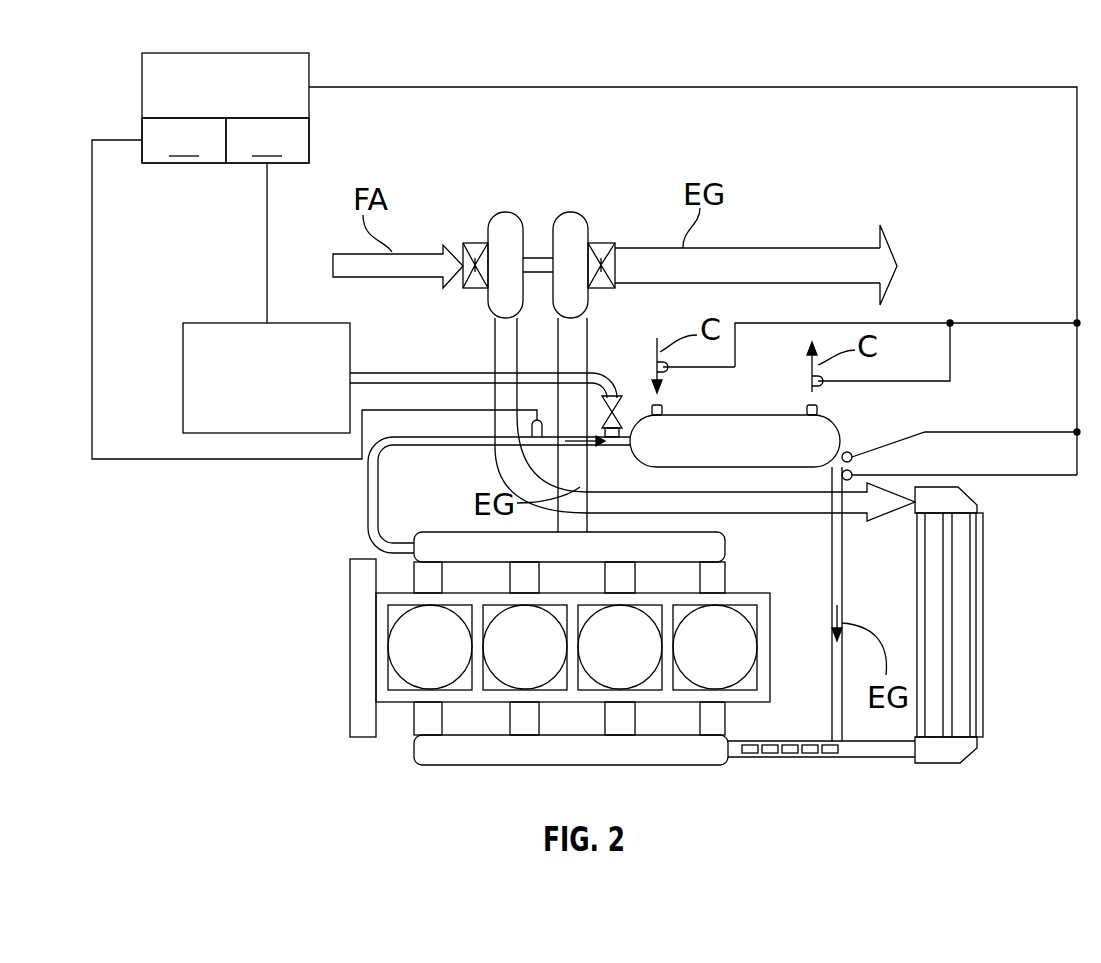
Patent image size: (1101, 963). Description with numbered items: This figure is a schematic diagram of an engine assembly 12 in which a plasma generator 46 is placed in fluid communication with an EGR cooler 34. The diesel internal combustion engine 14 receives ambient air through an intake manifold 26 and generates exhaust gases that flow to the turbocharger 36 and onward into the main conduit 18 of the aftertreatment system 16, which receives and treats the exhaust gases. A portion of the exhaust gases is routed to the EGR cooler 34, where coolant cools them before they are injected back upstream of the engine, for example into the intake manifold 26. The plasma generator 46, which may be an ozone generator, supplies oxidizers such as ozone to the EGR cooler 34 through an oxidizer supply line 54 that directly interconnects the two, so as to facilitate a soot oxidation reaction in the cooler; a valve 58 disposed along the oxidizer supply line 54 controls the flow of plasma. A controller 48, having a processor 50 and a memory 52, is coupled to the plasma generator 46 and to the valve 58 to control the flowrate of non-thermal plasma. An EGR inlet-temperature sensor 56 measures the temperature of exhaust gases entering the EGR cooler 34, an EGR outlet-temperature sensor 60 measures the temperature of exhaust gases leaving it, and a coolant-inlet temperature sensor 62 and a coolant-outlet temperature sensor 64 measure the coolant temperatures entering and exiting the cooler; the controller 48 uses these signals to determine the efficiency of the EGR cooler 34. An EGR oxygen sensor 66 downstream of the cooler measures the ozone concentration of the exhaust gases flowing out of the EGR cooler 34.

The engine assembly 12 is at (681, 130).
The diesel internal combustion engine 14 is at (572, 765).
The aftertreatment system 16 is at (763, 228).
The main conduit 18 is at (648, 248).
The intake manifold 26 is at (983, 627).
The EGR cooler 34 is at (735, 415).
The turbocharger 36 is at (537, 204).
The plasma generator 46 is at (183, 380).
The controller 48 is at (261, 100).
The processor 50 is at (184, 140).
The memory 52 is at (267, 140).
The oxidizer supply line 54 is at (440, 373).
The EGR inlet-temperature sensor 56 is at (535, 432).
The valve 58 is at (612, 395).
The EGR outlet-temperature sensor 60 is at (850, 482).
The coolant-inlet temperature sensor 62 is at (666, 370).
The coolant-outlet temperature sensor 64 is at (820, 383).
The EGR oxygen sensor 66 is at (850, 452).